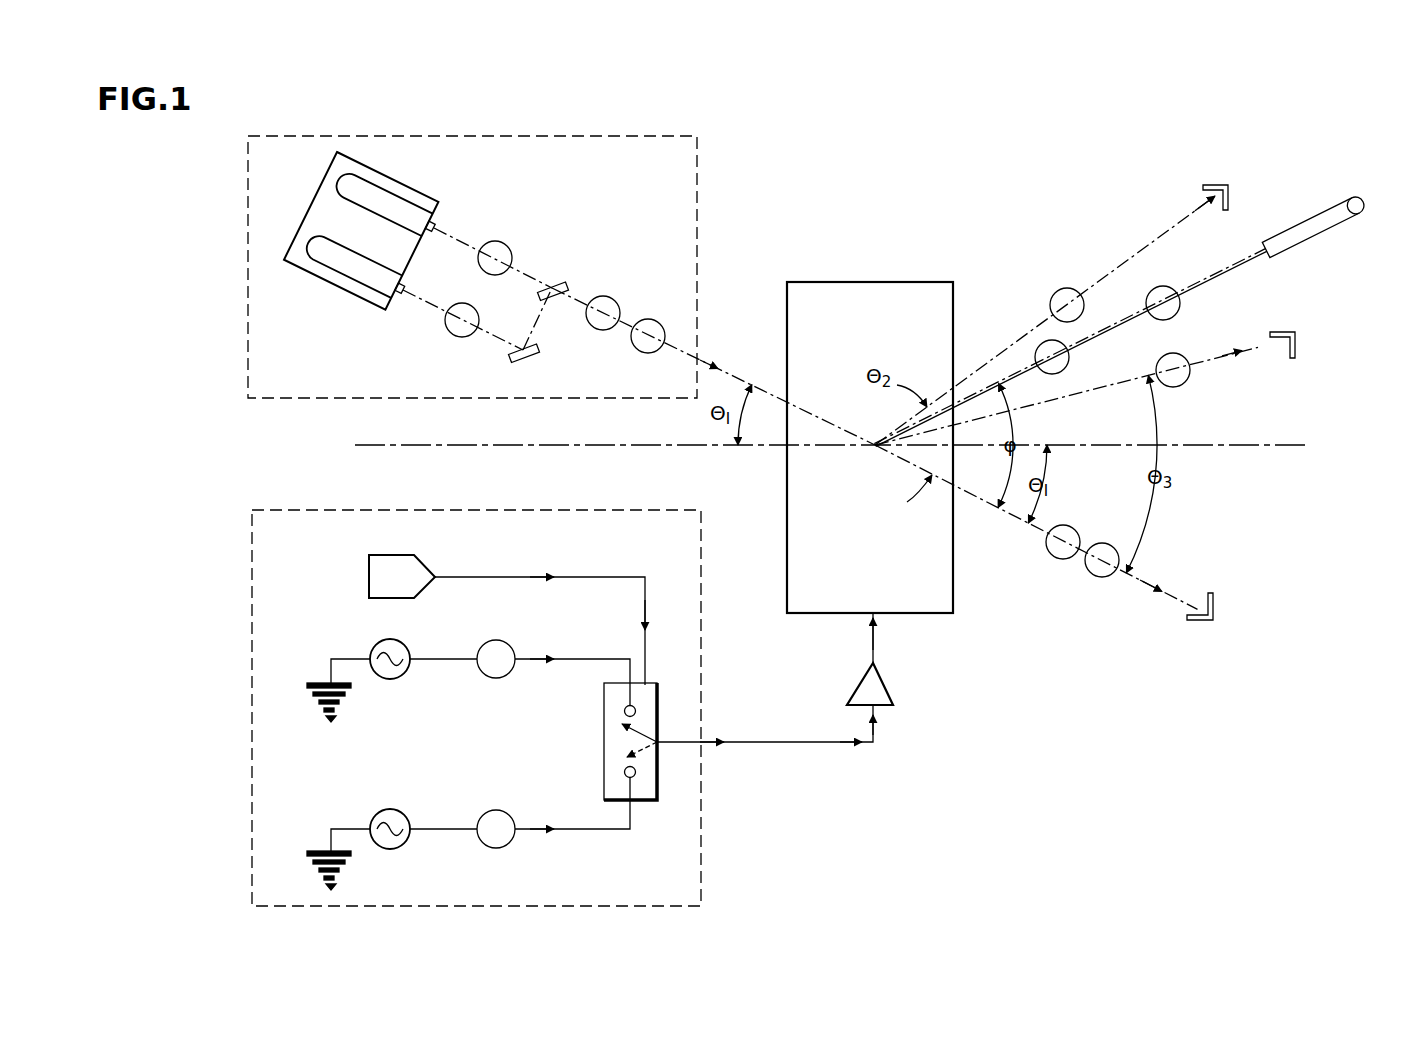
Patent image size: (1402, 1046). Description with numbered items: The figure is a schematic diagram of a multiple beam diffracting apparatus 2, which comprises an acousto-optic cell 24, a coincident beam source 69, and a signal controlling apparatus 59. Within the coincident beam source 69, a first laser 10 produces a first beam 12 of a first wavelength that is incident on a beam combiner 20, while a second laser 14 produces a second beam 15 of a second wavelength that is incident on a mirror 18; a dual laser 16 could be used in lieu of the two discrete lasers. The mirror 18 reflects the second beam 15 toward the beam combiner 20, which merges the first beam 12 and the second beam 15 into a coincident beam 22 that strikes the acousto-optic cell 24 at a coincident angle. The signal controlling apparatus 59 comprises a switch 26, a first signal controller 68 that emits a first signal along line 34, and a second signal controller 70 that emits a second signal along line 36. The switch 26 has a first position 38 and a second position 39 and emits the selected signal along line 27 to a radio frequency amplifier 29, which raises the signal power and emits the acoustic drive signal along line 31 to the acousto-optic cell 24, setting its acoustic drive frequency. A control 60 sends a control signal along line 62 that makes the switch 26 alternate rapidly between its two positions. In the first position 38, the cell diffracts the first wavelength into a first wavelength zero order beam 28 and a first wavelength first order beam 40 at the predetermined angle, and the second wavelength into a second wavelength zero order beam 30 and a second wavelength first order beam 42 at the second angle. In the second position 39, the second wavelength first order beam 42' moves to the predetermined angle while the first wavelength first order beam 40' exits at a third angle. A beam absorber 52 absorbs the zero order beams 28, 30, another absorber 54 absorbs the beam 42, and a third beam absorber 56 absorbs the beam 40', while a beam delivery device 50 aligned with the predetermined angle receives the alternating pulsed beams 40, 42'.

The multiple beam diffracting apparatus 2 is at (212, 189).
The first laser 10 is at (387, 205).
The first beam 12 is at (453, 235).
The second laser 14 is at (328, 260).
The second beam 15 is at (430, 302).
The dual laser 16 is at (318, 208).
The mirror 18 is at (523, 353).
The beam combiner 20 is at (553, 282).
The coincident beam 22 is at (677, 355).
The acousto-optic cell 24 is at (838, 281).
The switch 26 is at (604, 740).
The line 27 is at (750, 744).
The first wavelength zero order beam 28 is at (1036, 530).
The radio frequency amplifier 29 is at (890, 682).
The second wavelength zero order beam 30 is at (1142, 578).
The line 31 is at (870, 642).
The line 34 is at (420, 661).
The line 36 is at (420, 831).
The first position 38 is at (623, 706).
The second position 39 is at (625, 777).
The first wavelength first order beam 40 is at (1076, 348).
The first wavelength first order beam 40' is at (1069, 396).
The second wavelength first order beam 42 is at (1046, 319).
The second wavelength first order beam 42' is at (1069, 332).
The beam delivery device 50 is at (1302, 226).
The beam absorber 52 is at (1217, 607).
The absorber 54 is at (1218, 185).
The third beam absorber 56 is at (1288, 332).
The signal controlling apparatus 59 is at (358, 511).
The control 60 is at (402, 576).
The line 62 is at (520, 579).
The first signal controller 68 is at (378, 641).
The coincident beam source 69 is at (358, 134).
The second signal controller 70 is at (378, 810).